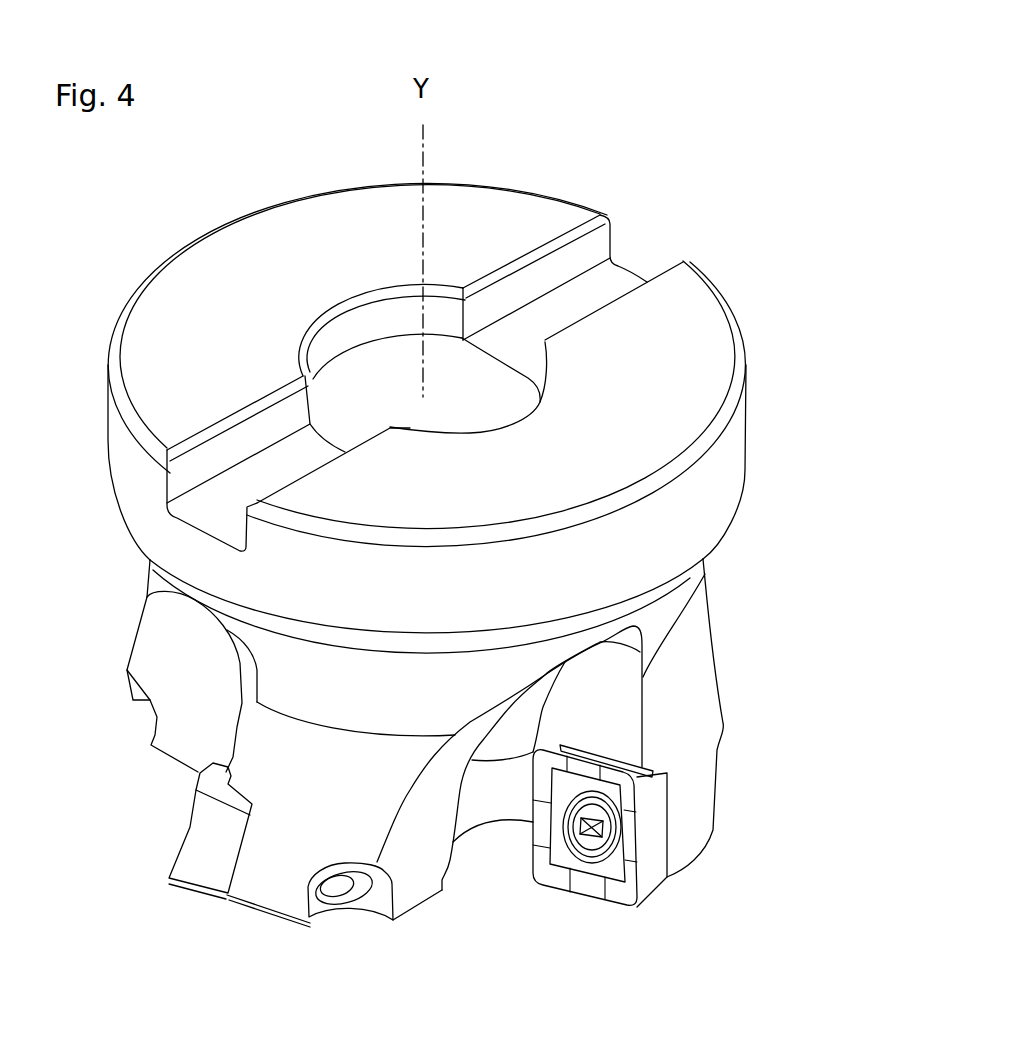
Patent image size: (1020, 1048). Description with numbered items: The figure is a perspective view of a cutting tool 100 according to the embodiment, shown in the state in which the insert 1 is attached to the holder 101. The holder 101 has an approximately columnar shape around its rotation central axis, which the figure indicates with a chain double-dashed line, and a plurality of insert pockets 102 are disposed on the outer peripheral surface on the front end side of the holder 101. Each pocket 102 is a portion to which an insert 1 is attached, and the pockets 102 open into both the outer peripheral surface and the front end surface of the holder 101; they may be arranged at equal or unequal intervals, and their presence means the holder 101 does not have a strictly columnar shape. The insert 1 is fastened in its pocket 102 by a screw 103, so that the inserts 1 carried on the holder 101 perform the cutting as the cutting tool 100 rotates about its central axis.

The cutting tool 100 is at (703, 216).
The holder 101 is at (680, 613).
The insert pocket 102 is at (637, 762).
The insert 1 is at (662, 768).
The screw 103 is at (565, 845).